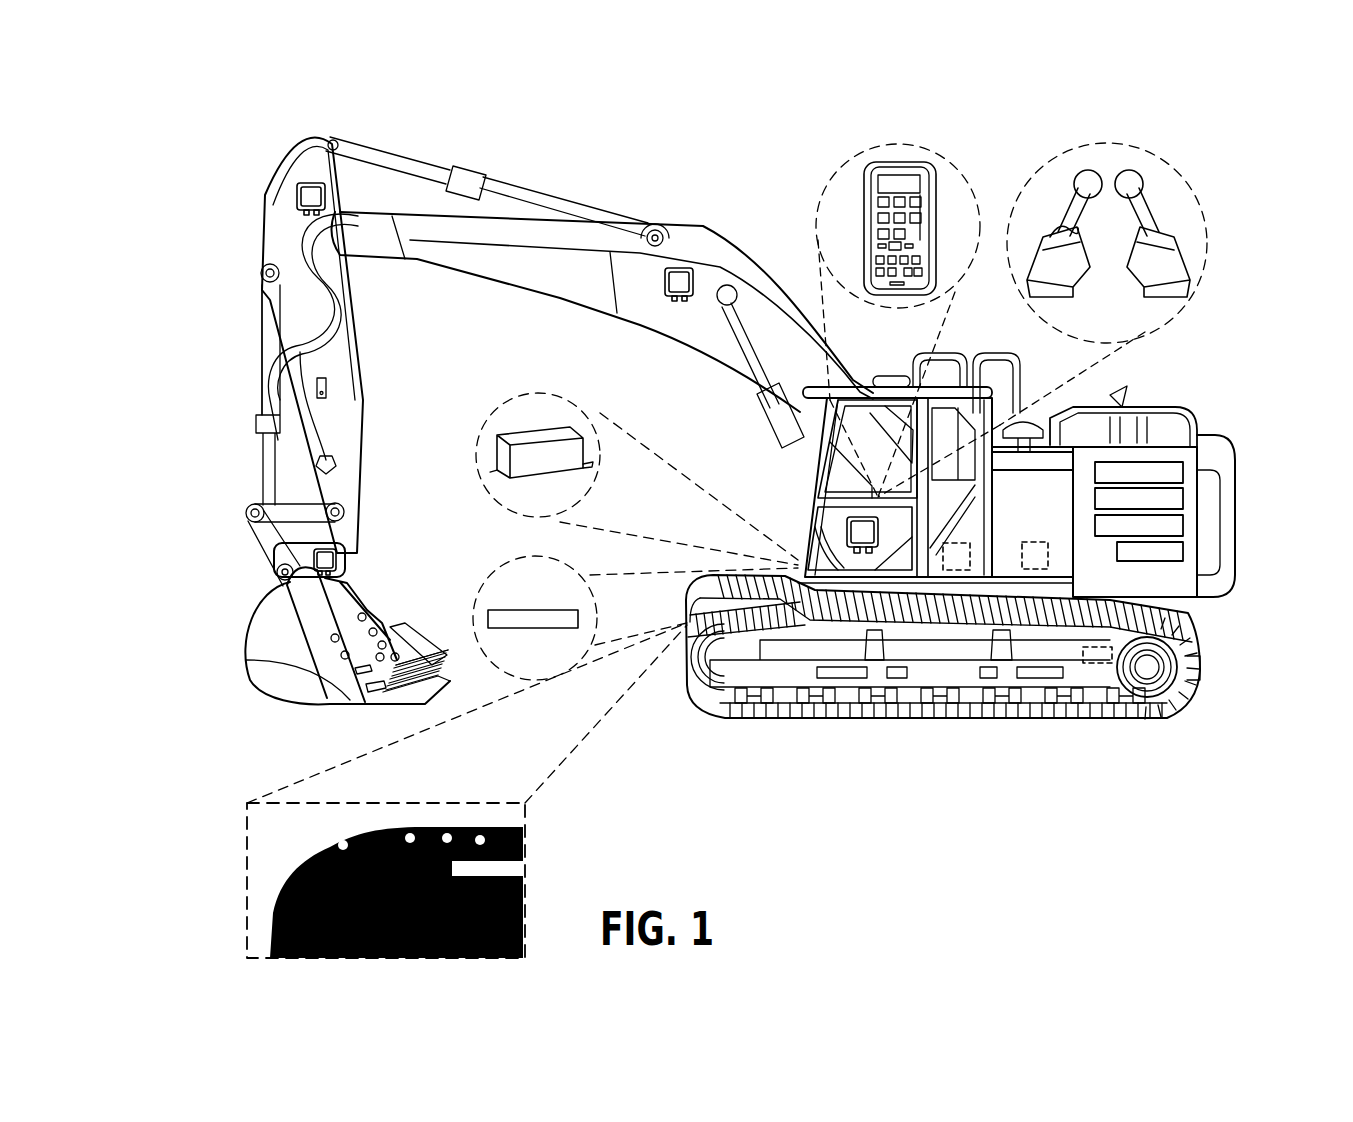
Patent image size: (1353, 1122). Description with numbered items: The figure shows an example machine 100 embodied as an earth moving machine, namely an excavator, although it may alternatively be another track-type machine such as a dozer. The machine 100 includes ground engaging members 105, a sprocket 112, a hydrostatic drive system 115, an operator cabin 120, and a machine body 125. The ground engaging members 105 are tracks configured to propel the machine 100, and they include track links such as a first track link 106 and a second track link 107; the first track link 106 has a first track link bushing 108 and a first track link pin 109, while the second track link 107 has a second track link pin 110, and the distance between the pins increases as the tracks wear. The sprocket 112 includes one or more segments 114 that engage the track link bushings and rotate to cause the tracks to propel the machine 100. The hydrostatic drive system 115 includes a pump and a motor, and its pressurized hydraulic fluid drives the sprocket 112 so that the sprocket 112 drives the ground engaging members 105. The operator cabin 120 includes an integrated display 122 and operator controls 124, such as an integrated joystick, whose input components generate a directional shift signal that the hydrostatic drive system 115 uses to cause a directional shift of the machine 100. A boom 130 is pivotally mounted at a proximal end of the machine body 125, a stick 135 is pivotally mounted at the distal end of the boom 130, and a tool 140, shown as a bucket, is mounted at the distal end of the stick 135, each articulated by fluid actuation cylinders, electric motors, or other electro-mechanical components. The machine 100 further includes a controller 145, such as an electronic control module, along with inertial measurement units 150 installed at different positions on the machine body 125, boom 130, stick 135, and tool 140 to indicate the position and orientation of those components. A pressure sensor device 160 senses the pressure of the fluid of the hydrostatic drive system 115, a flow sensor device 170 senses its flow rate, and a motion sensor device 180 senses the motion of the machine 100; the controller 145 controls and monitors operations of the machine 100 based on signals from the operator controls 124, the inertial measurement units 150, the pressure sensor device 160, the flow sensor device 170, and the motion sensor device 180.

The machine 100 is at (192, 90).
The ground engaging members 105 is at (1205, 673).
The first track link 106 is at (367, 830).
The second track link 107 is at (445, 832).
The first track link bushing 108 is at (343, 840).
The first track link pin 109 is at (410, 833).
The second track link pin 110 is at (470, 837).
The sprocket 112 is at (712, 682).
The segment 114 is at (297, 890).
The hydrostatic drive system 115 is at (517, 673).
The operator cabin 120 is at (798, 490).
The integrated display 122 is at (940, 155).
The operator controls 124 is at (1145, 152).
The machine body 125 is at (1237, 512).
The boom 130 is at (673, 320).
The stick 135 is at (343, 427).
The tool 140 is at (293, 667).
The controller 145 is at (540, 511).
The inertial measurement unit 150 is at (307, 180).
The pressure sensor device 160 is at (960, 570).
The flow sensor device 170 is at (1038, 570).
The motion sensor device 180 is at (1103, 664).